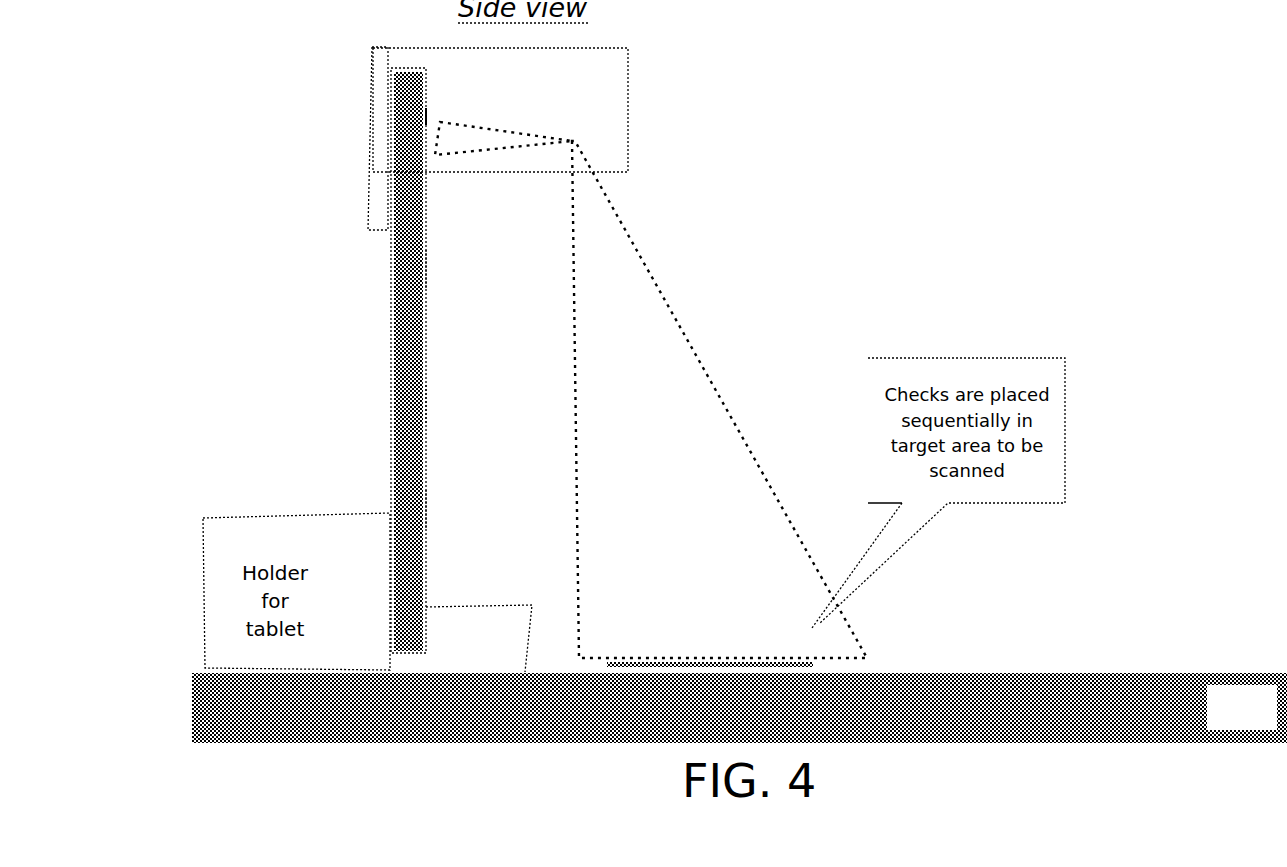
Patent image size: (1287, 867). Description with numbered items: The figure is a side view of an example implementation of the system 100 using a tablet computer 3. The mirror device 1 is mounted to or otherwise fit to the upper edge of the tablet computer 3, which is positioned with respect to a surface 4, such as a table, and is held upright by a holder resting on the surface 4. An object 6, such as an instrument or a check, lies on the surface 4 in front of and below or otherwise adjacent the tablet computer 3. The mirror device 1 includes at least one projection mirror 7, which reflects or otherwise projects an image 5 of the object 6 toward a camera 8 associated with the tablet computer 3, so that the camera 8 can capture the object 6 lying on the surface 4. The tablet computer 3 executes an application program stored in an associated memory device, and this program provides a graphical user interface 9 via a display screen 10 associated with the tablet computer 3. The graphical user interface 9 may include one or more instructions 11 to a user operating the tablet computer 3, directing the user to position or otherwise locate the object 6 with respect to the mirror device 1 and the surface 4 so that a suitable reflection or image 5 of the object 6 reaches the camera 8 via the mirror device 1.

The system 100 is at (1050, 86).
The mirror device 1 is at (424, 138).
The tablet computer 3 is at (350, 360).
The surface 4 is at (739, 708).
The image 5 is at (770, 399).
The object 6 is at (661, 608).
The projection mirror 7 is at (508, 133).
The camera 8 is at (428, 115).
The graphical user interface 9 is at (468, 252).
The display screen 10 is at (473, 393).
The instructions 11 is at (472, 498).